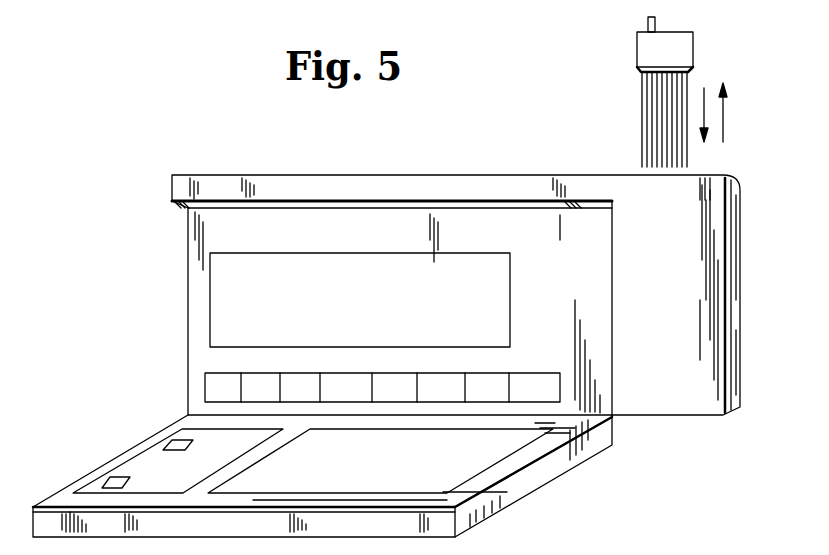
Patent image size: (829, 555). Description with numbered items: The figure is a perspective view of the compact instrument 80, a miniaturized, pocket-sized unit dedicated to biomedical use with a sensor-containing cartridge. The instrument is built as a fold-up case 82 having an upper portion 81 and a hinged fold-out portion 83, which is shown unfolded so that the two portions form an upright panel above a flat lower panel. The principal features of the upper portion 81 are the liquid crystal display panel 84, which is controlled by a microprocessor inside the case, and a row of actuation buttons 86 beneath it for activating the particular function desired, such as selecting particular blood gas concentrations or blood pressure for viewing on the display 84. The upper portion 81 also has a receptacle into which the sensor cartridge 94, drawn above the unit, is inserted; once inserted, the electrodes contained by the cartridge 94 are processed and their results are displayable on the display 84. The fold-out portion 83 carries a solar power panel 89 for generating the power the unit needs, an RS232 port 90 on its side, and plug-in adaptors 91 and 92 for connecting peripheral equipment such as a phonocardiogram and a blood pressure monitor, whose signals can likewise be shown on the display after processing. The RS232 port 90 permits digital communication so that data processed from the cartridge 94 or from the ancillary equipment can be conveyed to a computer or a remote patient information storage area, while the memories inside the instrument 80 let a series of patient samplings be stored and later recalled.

The compact instrument 80 is at (312, 172).
The upper portion 81 is at (735, 323).
The fold-up case 82 is at (188, 244).
The fold-out portion 83 is at (137, 535).
The liquid crystal display panel 84 is at (392, 260).
The row of actuation buttons 86 is at (207, 378).
The solar power panel 89 is at (365, 487).
The RS232 port 90 is at (492, 509).
The plug-in adaptor 91 is at (110, 484).
The plug-in adaptor 92 is at (178, 446).
The sensor cartridge 94 is at (637, 47).